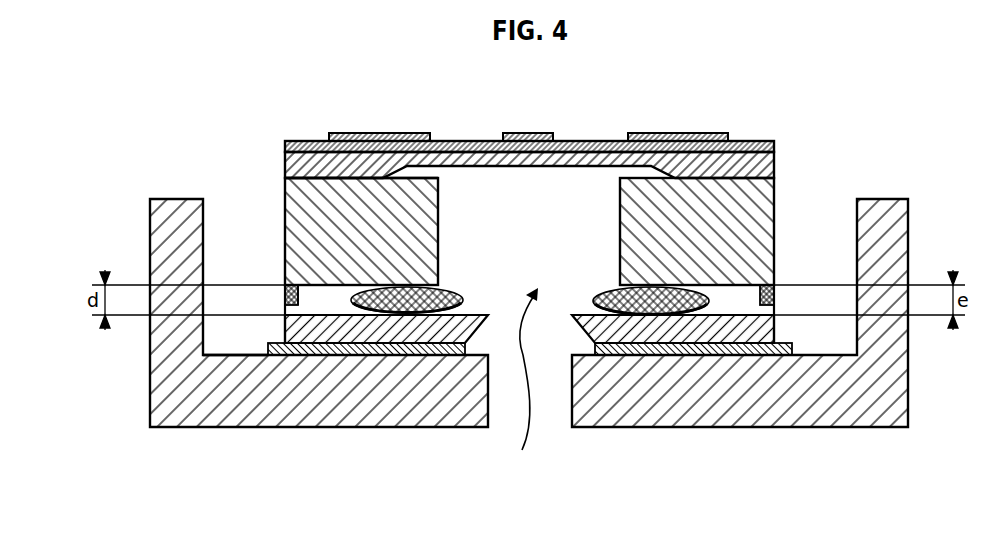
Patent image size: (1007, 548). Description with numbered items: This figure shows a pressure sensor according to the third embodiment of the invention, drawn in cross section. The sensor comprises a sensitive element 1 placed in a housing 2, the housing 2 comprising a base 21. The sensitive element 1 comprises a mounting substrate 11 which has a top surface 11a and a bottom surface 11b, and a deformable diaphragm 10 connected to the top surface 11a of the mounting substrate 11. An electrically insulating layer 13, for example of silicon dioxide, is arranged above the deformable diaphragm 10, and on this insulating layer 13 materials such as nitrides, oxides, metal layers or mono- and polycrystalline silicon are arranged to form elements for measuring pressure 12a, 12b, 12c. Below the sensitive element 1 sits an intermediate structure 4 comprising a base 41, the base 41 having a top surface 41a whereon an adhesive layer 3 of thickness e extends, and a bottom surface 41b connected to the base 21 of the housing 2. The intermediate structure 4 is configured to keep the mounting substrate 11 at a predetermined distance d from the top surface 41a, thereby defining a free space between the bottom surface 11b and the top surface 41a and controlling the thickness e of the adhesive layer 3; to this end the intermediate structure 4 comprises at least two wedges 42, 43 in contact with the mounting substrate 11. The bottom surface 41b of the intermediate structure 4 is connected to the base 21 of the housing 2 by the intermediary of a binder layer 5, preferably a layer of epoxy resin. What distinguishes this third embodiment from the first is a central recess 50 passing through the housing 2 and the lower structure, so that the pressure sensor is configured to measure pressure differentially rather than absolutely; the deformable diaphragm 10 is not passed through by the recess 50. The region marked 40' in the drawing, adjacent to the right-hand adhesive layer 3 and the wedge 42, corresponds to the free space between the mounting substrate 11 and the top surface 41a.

The sensitive element 1 is at (513, 275).
The housing 2 is at (883, 390).
The base 21 is at (223, 352).
The adhesive layer 3 is at (652, 303).
The intermediate structure 4 is at (396, 370).
The binder layer 5 is at (323, 347).
The deformable diaphragm 10 is at (752, 160).
The mounting substrate 11 is at (303, 222).
The top surface 11a is at (285, 179).
The bottom surface 11b is at (284, 284).
The element for measuring pressure 12a is at (383, 133).
The element for measuring pressure 12b is at (528, 133).
The element for measuring pressure 12c is at (687, 133).
The electrically insulating layer 13 is at (592, 146).
The second piezoelectric element 40' is at (673, 386).
The base 41 is at (452, 326).
The top surface 41a is at (486, 310).
The bottom surface 41b is at (383, 320).
The wedge 42 is at (758, 301).
The wedge 43 is at (298, 303).
The central recess 50 is at (518, 380).